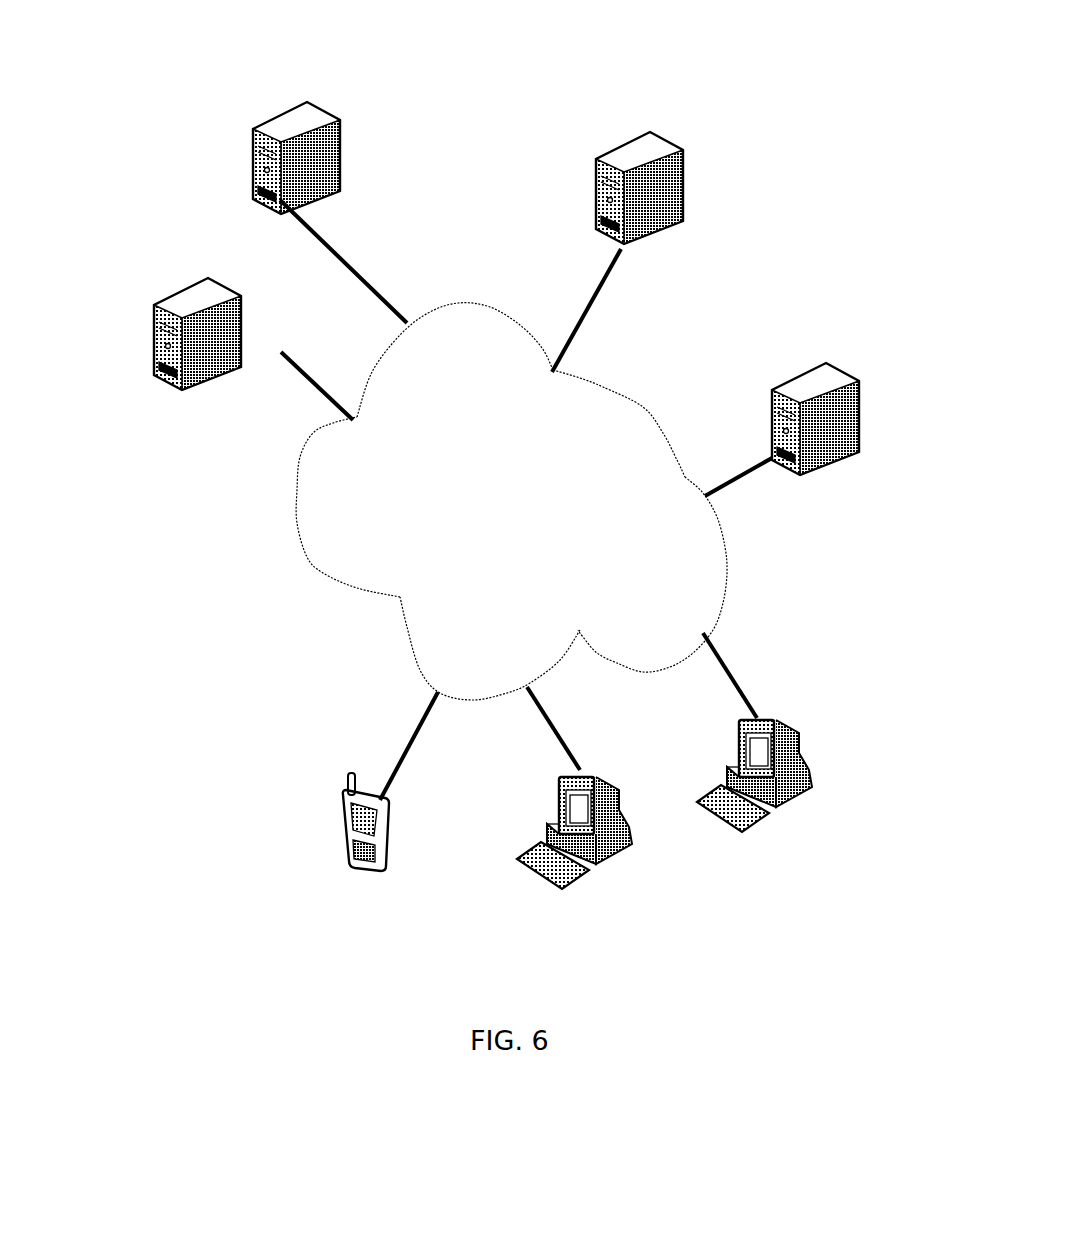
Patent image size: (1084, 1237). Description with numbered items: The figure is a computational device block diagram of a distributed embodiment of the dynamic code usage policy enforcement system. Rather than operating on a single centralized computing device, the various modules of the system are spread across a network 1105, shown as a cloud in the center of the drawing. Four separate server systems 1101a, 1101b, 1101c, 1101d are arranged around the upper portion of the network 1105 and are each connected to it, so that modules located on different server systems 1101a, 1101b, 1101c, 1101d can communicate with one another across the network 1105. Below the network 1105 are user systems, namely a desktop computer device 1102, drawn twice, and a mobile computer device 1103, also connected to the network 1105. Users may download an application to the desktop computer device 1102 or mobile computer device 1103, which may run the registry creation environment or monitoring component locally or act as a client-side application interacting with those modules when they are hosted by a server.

The server system 1101a is at (187, 287).
The server system 1101b is at (290, 102).
The server system 1101c is at (636, 128).
The server system 1101d is at (840, 361).
The desktop computer device 1102 is at (803, 797).
The mobile computer device 1103 is at (350, 867).
The network 1105 is at (357, 590).